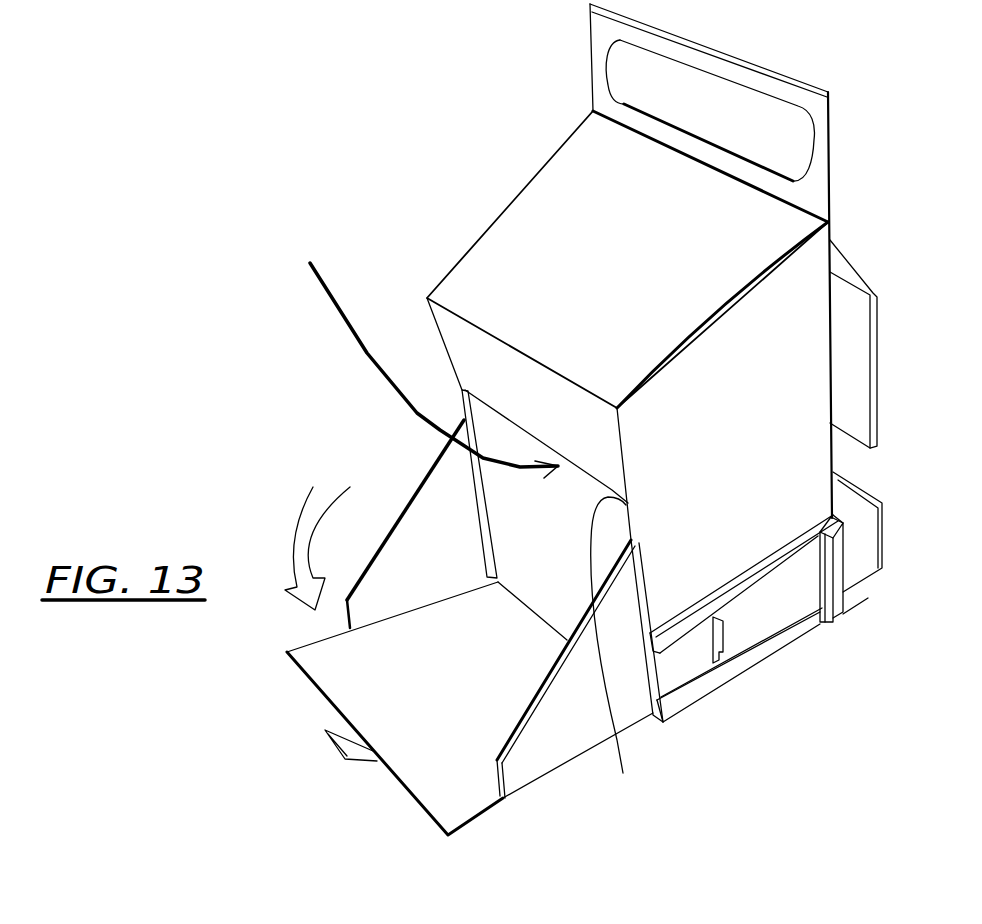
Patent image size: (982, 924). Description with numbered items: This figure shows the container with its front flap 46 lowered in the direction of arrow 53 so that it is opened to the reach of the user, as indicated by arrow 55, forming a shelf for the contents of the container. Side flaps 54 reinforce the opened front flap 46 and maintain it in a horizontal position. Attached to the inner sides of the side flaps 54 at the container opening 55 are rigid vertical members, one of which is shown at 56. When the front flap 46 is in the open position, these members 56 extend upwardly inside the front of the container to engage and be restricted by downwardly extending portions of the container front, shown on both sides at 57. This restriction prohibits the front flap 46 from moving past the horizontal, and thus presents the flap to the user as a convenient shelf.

The front flap 46 is at (472, 673).
The arrow 53 is at (317, 534).
The side flaps 54 is at (375, 597).
The arrow 55 is at (421, 354).
The rigid vertical member 56 is at (475, 467).
The downwardly extending portion of the container front 57 is at (457, 404).